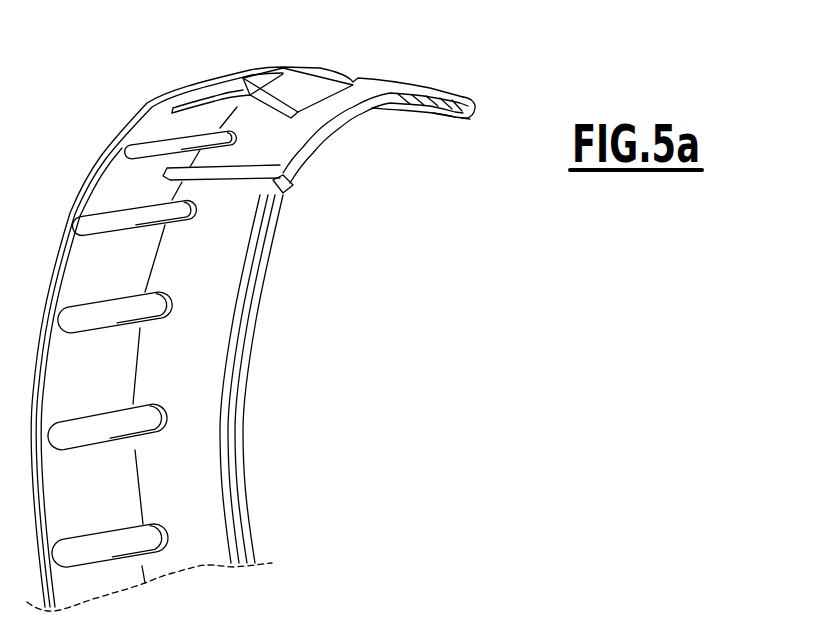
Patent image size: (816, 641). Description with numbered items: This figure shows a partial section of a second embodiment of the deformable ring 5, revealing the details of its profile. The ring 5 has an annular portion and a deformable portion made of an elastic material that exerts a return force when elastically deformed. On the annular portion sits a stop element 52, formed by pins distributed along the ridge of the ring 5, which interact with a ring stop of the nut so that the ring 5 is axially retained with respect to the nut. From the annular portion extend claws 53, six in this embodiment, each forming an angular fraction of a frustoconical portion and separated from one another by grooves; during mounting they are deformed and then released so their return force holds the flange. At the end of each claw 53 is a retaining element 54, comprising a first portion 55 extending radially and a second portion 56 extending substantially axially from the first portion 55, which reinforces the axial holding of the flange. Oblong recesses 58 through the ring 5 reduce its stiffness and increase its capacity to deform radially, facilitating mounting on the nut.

The deformable ring 5 is at (250, 395).
The stop element 52 is at (320, 75).
The claws 53 is at (415, 86).
The retaining element 54 is at (467, 95).
The first portion 55 is at (443, 115).
The second portion 56 is at (470, 121).
The recesses 58 is at (155, 307).